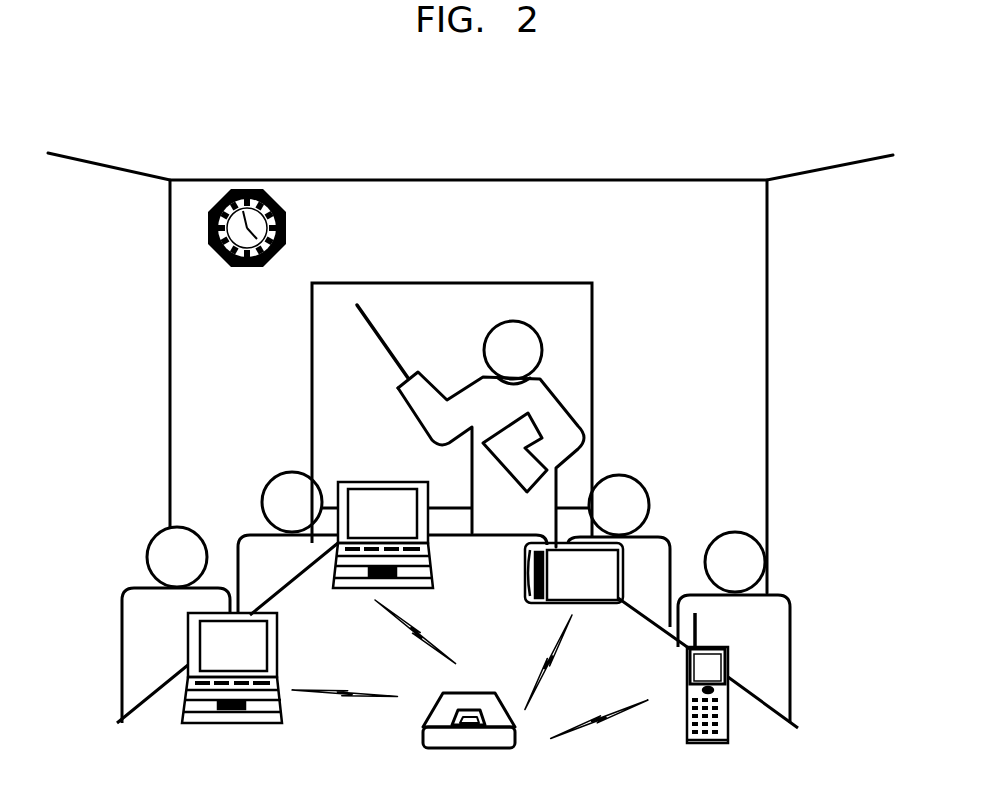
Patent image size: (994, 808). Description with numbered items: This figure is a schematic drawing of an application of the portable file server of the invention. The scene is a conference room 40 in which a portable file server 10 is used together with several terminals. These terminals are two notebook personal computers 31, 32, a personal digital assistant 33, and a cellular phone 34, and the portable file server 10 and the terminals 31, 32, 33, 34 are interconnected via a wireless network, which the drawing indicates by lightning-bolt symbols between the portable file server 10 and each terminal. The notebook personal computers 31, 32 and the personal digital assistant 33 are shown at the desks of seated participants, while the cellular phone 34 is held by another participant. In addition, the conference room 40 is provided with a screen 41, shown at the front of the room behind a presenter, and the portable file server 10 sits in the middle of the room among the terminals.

The portable file server 10 is at (472, 750).
The notebook personal computer 31 is at (226, 723).
The notebook personal computer 32 is at (348, 590).
The personal digital assistant 33 is at (597, 604).
The cellular phone 34 is at (710, 744).
The conference room 40 is at (491, 168).
The screen 41 is at (478, 283).